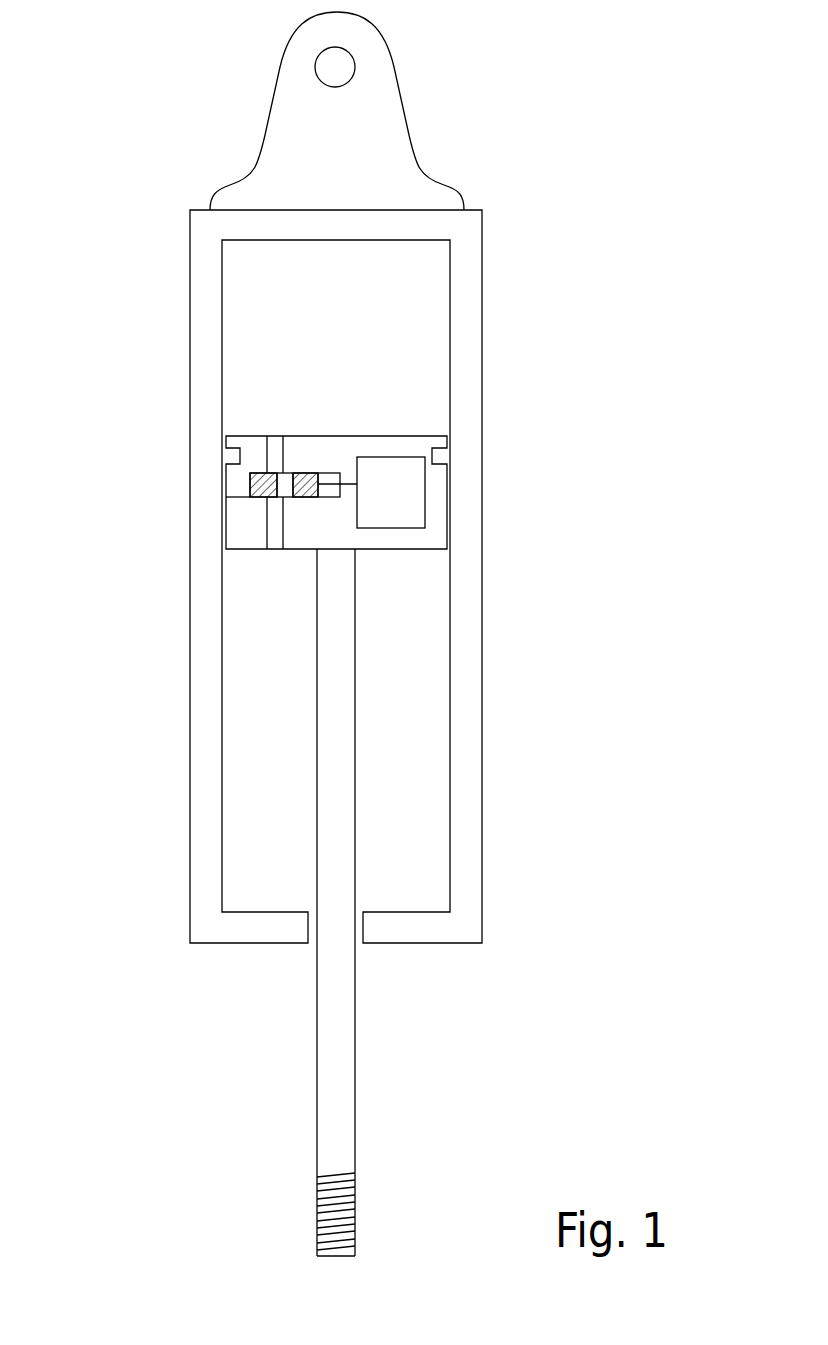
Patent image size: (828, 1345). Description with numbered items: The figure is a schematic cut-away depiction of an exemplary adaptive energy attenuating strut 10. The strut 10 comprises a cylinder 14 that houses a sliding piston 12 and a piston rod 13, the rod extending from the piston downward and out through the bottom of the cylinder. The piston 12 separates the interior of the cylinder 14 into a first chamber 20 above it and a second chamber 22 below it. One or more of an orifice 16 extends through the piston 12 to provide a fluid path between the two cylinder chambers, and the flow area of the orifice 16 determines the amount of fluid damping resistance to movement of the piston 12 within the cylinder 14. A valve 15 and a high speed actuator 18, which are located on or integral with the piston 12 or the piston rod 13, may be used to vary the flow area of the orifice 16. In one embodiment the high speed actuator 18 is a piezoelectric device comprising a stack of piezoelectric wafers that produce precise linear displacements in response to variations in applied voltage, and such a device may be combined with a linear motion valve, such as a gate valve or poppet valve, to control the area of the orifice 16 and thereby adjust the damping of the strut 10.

The energy attenuating strut 10 is at (603, 160).
The piston 12 is at (417, 552).
The piston rod 13 is at (317, 1082).
The cylinder 14 is at (482, 345).
The valve 15 is at (250, 485).
The orifice 16 is at (273, 532).
The high speed actuator 18 is at (425, 493).
The first chamber 20 is at (348, 338).
The second chamber 22 is at (282, 730).